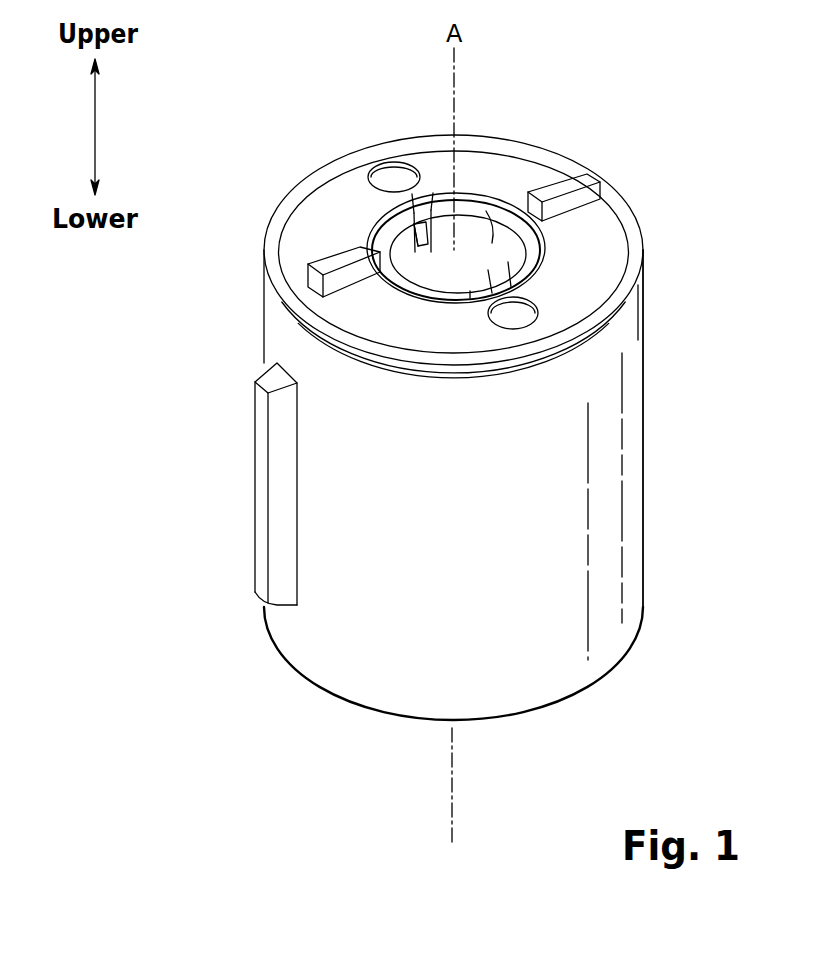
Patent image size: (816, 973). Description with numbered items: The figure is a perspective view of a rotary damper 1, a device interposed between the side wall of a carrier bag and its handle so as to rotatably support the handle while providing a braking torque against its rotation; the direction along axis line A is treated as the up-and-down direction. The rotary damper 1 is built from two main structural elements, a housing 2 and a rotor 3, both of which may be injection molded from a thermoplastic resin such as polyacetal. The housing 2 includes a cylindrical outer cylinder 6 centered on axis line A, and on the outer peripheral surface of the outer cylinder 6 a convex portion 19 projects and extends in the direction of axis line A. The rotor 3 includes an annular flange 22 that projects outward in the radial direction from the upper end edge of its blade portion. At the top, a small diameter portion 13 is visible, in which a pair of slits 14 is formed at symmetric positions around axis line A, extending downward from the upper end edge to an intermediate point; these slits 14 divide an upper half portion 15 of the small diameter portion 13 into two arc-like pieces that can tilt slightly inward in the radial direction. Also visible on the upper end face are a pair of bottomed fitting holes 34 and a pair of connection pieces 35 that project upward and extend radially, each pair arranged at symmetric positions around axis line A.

The rotary damper 1 is at (627, 118).
The housing 2 is at (544, 706).
The rotor 3 is at (468, 135).
The outer cylinder 6 is at (348, 688).
The small diameter portion 13 is at (490, 232).
The slits 14 is at (424, 205).
The upper half portion 15 is at (418, 230).
The convex portion 19 is at (260, 418).
The flange 22 is at (267, 246).
The fitting holes 34 is at (393, 162).
The connection pieces 35 is at (355, 257).